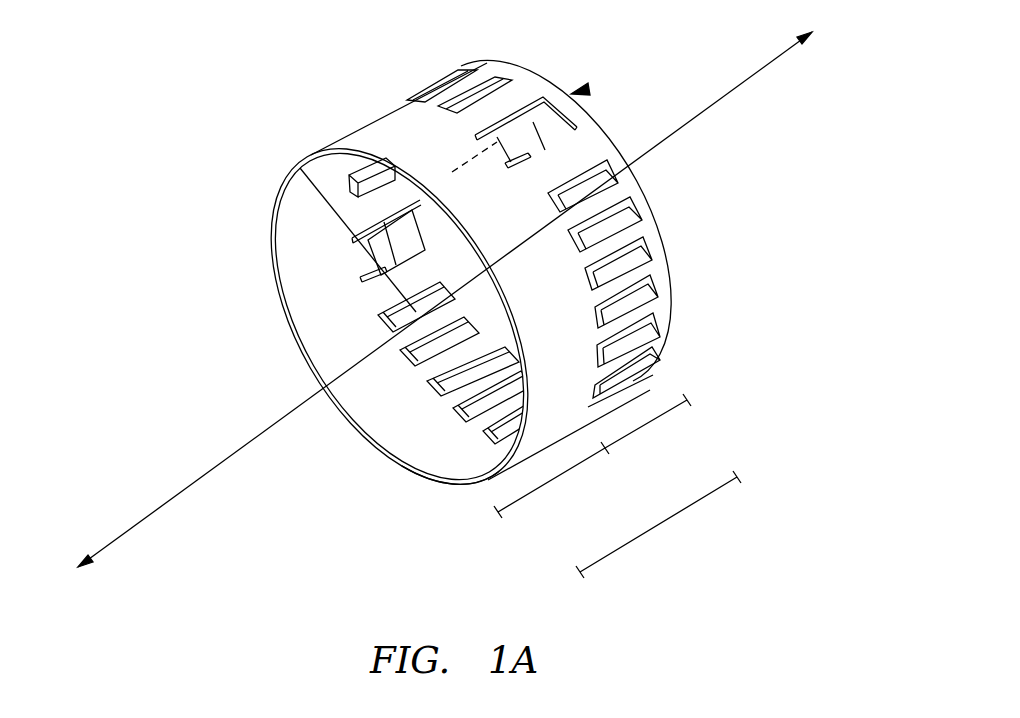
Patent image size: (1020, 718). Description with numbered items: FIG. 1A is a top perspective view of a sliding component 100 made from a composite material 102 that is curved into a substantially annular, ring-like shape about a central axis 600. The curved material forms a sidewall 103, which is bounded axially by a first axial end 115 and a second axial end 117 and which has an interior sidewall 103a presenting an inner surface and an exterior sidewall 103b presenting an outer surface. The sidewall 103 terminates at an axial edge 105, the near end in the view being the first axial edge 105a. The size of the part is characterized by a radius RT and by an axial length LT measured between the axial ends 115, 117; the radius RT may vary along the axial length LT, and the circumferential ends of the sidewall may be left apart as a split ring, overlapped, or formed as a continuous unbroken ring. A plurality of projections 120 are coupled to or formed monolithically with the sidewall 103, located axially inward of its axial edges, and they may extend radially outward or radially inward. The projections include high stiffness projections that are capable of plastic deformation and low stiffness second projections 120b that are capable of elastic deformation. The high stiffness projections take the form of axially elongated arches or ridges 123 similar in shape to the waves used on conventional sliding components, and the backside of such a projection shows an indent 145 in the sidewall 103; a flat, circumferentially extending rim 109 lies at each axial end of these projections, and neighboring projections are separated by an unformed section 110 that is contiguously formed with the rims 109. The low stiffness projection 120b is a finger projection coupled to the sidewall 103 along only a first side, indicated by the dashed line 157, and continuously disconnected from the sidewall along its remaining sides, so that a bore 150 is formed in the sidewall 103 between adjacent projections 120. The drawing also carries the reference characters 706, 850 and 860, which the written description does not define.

The sliding component 100 is at (160, 76).
The composite material 102 is at (553, 83).
The sidewall 103 is at (370, 118).
The interior sidewall 103a is at (383, 428).
The exterior sidewall 103b is at (330, 147).
The axial edge 105 is at (660, 222).
The first axial edge 105a is at (457, 492).
The rim 109 is at (670, 262).
The unformed section 110 is at (657, 300).
The first axial end 115 is at (608, 137).
The second axial end 117 is at (273, 227).
The projection 120 is at (359, 273).
The second projection 120b is at (547, 110).
The axially-elongated arches or ridges 123 is at (404, 348).
The indent 145 is at (657, 350).
The bore 150 is at (453, 140).
The dashed line 157 is at (428, 145).
The opening 706 is at (493, 128).
The central axis 600 is at (748, 79).
The first axial length 850 is at (545, 480).
The second axial length 860 is at (633, 430).
The axial length LT is at (657, 522).
The radius RT is at (312, 190).